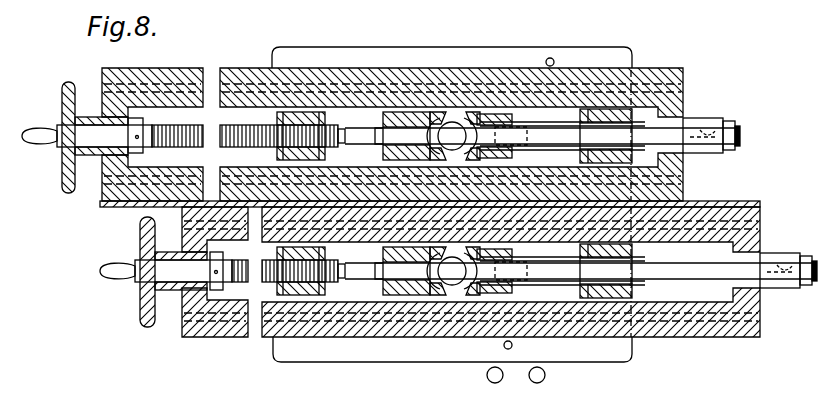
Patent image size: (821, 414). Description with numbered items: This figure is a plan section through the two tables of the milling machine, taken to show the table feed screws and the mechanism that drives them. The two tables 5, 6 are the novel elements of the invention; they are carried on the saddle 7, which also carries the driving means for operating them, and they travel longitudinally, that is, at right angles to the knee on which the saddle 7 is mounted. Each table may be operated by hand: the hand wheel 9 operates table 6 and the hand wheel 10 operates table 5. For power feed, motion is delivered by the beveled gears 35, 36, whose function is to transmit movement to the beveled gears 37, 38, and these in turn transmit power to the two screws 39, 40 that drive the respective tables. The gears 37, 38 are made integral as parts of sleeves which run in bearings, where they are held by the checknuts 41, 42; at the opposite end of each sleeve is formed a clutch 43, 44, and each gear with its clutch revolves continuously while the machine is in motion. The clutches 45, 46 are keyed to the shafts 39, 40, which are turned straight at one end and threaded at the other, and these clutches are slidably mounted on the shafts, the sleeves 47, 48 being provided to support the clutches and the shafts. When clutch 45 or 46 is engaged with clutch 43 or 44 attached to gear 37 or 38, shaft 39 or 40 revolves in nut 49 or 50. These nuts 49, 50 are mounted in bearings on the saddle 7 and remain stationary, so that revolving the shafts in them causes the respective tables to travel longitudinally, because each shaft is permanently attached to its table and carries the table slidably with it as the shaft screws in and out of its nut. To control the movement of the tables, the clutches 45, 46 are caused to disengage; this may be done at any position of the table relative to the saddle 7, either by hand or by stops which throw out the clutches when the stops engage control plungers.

The table 5 is at (182, 330).
The table 6 is at (62, 182).
The saddle 7 is at (377, 47).
The hand wheel 9 is at (87, 137).
The hand wheel 10 is at (140, 300).
The beveled gear 35 is at (450, 293).
The beveled gear 36 is at (463, 118).
The beveled gear 37 is at (413, 122).
The beveled gear 38 is at (418, 285).
The screw 39 is at (247, 127).
The screw 40 is at (245, 277).
The checknut 41 is at (383, 120).
The checknut 42 is at (383, 293).
The clutch 43 is at (483, 118).
The clutch 44 is at (468, 290).
The clutch 45 is at (510, 297).
The clutch 46 is at (520, 115).
The sleeve 47 is at (600, 292).
The sleeve 48 is at (605, 115).
The nut 49 is at (307, 123).
The nut 50 is at (277, 330).